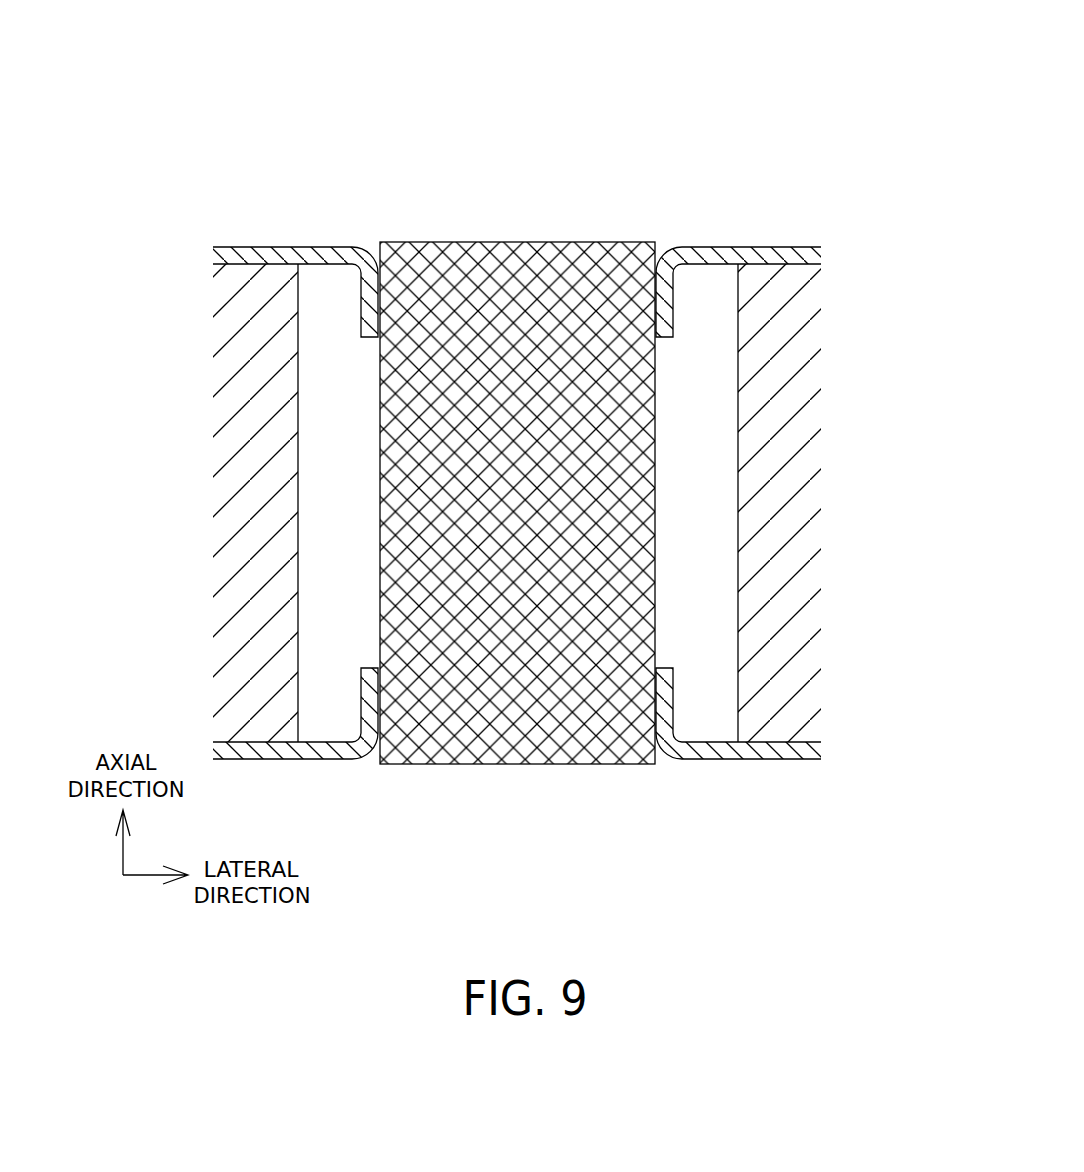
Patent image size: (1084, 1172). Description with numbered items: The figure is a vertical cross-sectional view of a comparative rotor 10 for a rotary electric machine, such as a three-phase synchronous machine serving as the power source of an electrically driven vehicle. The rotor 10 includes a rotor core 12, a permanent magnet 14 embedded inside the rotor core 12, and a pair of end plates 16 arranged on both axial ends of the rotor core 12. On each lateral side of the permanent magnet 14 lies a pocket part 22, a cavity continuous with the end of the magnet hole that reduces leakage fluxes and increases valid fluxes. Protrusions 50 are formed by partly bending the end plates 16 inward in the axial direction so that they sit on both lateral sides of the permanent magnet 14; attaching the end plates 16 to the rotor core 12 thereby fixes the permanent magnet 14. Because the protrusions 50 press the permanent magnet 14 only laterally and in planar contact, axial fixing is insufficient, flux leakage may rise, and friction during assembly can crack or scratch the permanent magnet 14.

The rotor 10 is at (480, 98).
The rotor core 12 is at (795, 484).
The permanent magnet 14 is at (513, 262).
The end plate 16 is at (780, 253).
The pocket part 22 is at (328, 459).
The protrusion 50 is at (362, 306).